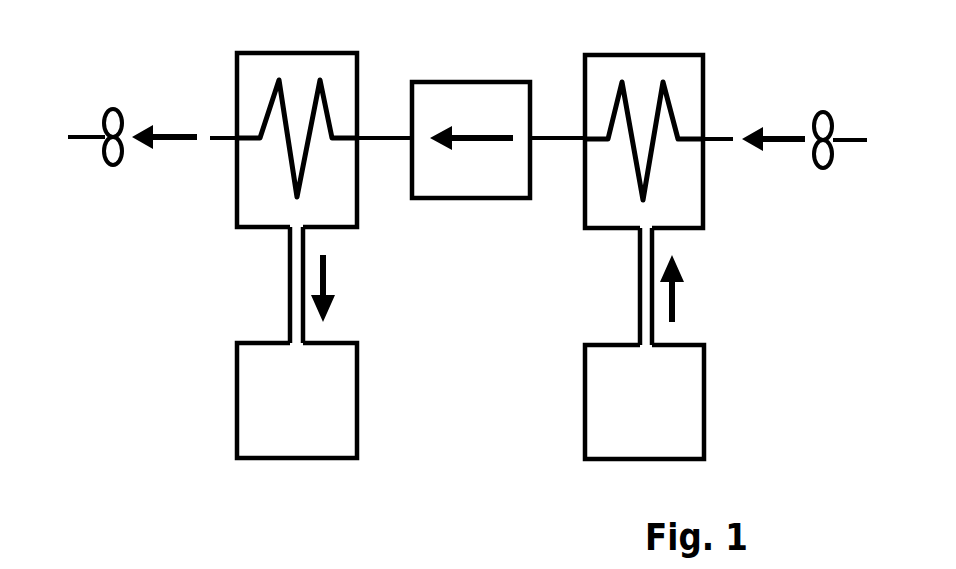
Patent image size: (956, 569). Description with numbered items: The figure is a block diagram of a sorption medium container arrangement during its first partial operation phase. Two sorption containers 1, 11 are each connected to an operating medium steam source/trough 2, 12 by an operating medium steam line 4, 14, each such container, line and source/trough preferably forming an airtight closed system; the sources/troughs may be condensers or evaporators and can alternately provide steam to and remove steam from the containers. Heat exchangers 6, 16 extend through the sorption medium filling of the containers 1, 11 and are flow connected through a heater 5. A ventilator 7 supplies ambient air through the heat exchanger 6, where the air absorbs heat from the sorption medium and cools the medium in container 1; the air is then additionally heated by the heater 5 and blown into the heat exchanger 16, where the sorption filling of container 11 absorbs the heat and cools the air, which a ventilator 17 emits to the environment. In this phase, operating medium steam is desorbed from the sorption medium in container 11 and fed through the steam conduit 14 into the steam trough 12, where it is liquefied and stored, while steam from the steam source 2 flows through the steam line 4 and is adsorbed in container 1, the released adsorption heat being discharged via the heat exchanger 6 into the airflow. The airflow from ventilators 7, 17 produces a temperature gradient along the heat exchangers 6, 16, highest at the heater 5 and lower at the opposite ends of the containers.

The sorption medium container 1 is at (707, 172).
The operating medium steam source/trough 2 is at (705, 358).
The operating medium steam line 4 is at (655, 340).
The heater 5 is at (470, 81).
The heat exchanger 6 is at (668, 92).
The ventilator 7 is at (848, 137).
The sorption medium container 11 is at (235, 173).
The operating medium steam source/trough 12 is at (237, 358).
The operating medium steam line 14 is at (287, 262).
The heat exchanger 16 is at (275, 92).
The ventilator 17 is at (95, 135).